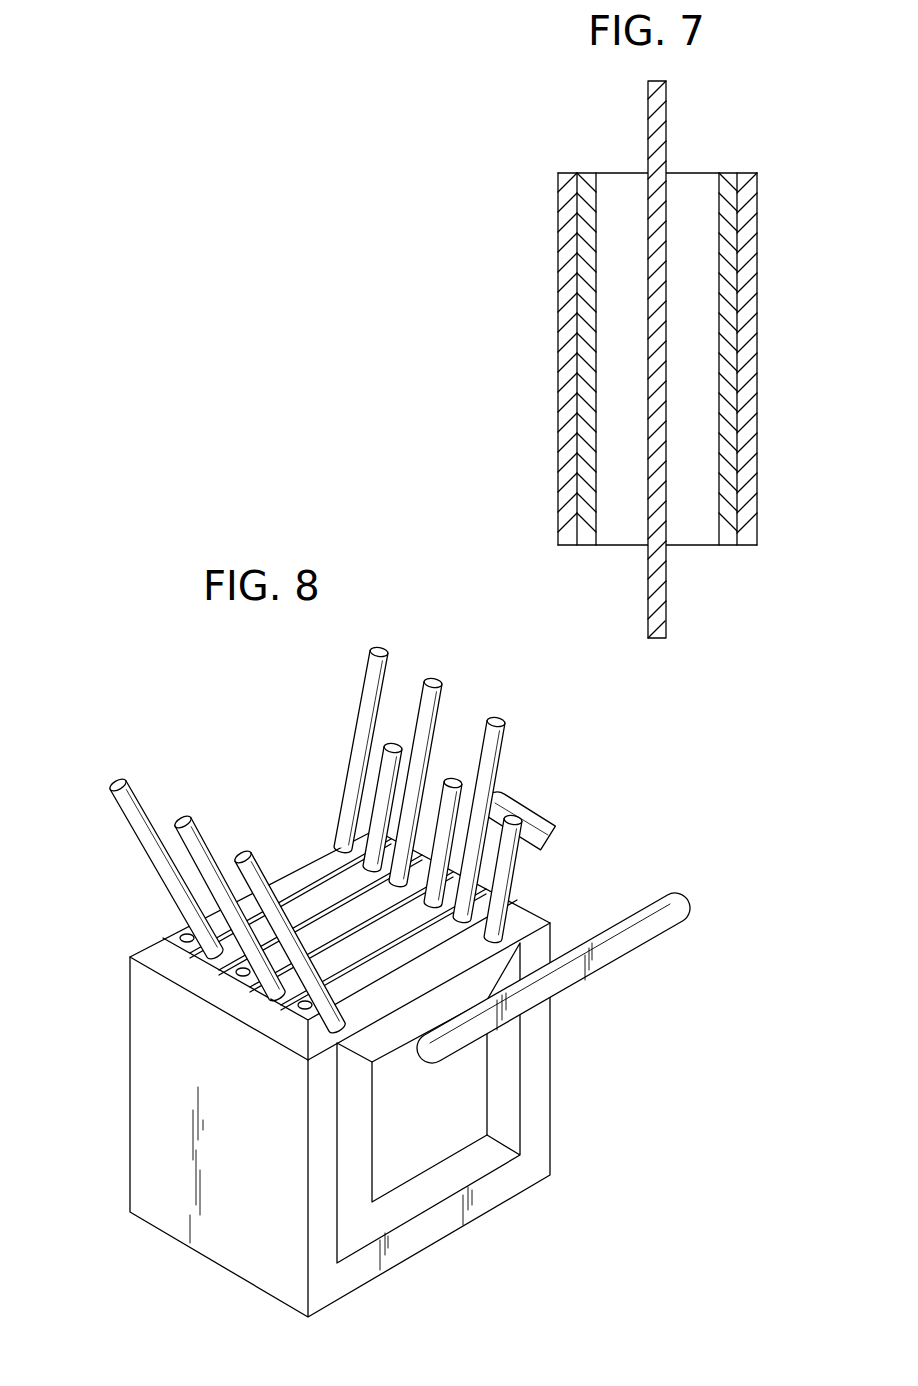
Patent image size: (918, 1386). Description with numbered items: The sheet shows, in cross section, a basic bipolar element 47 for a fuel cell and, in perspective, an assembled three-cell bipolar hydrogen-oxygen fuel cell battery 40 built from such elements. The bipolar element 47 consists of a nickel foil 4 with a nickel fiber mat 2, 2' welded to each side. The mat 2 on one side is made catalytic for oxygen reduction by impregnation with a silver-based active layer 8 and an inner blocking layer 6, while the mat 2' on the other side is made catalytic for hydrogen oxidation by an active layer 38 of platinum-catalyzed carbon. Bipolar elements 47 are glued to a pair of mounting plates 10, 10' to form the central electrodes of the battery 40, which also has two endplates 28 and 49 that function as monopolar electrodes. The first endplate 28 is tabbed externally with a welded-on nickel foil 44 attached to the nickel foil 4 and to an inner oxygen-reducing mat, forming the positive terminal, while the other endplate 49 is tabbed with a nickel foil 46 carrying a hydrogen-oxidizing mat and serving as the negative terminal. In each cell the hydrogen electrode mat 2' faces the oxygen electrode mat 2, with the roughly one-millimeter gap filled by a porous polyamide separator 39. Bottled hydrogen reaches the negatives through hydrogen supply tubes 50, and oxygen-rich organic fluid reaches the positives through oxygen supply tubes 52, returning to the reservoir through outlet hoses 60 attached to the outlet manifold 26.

In FIG. 7, the nickel foil 4 is at (660, 122).
In FIG. 8, the nickel foil 4 is at (428, 1123).
In FIG. 7, the active layer 38 is at (565, 213).
In FIG. 7, the silver-based active layer 8 is at (748, 207).
In FIG. 7, the inner blocking layer 6 is at (585, 542).
In FIG. 7, the nickel fiber mat 2 is at (704, 360).
In FIG. 7, the nickel fiber mat 2' is at (618, 360).
In FIG. 7, the bipolar element 47 is at (670, 359).
In FIG. 8, the outlet hoses 60 is at (462, 794).
In FIG. 8, the hydrogen supply tubes 50 is at (500, 747).
In FIG. 8, the oxygen supply tubes 52 is at (130, 812).
In FIG. 8, the endplate 49 is at (288, 875).
In FIG. 8, the nickel foil 46 is at (503, 805).
In FIG. 8, the outlet manifold 26 is at (513, 925).
In FIG. 8, the nickel foil 44 is at (647, 933).
In FIG. 8, the endplate 28 is at (475, 1106).
In FIG. 8, the porous polyamide separator 39 is at (413, 967).
In FIG. 8, the mounting plate 10 is at (214, 997).
In FIG. 8, the mounting plate 10' is at (265, 1048).
In FIG. 8, the bipolar hydrogen oxygen fuel cell battery 40 is at (386, 981).